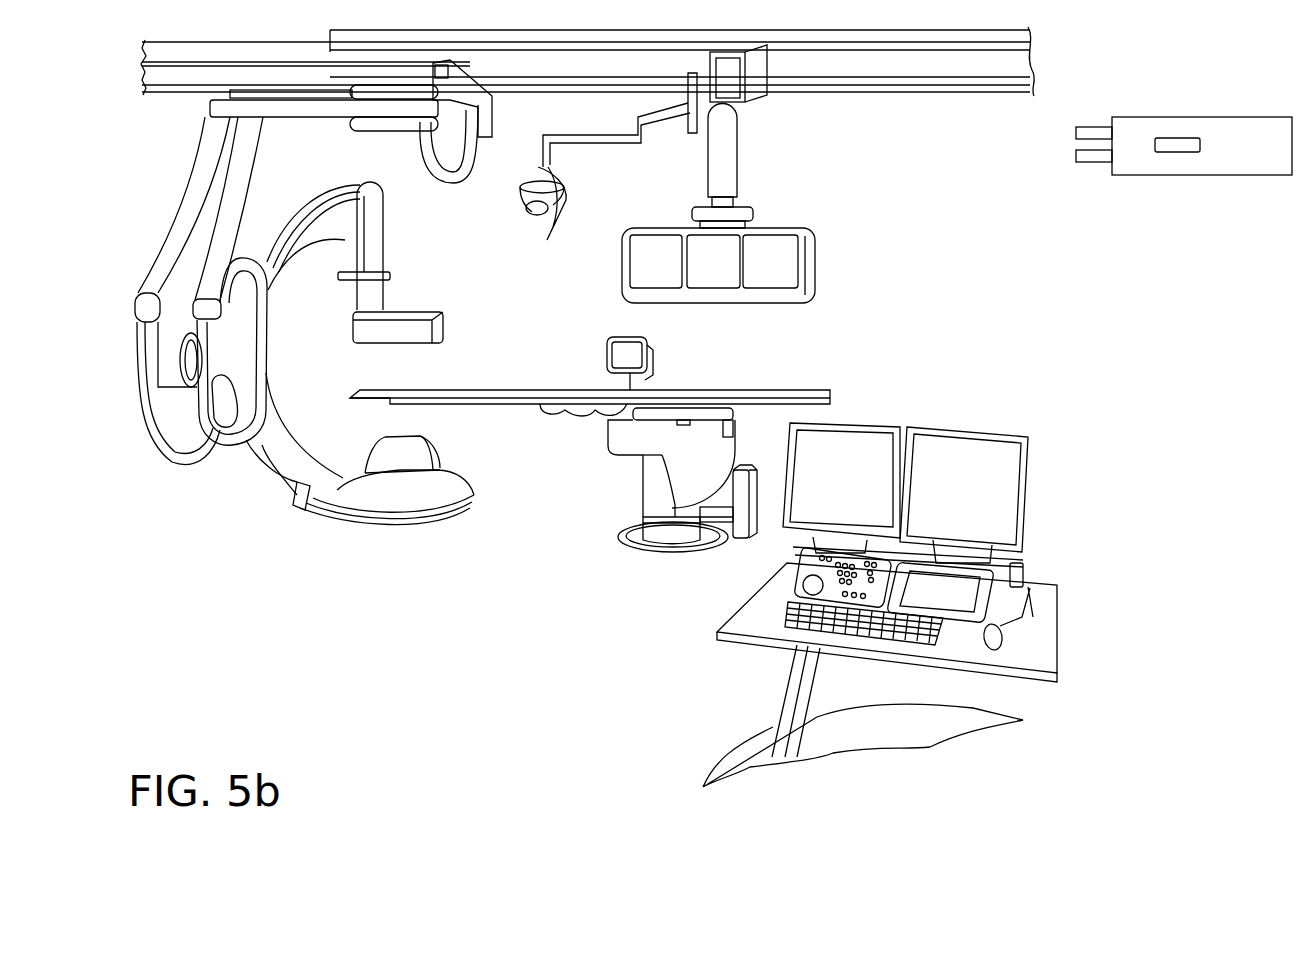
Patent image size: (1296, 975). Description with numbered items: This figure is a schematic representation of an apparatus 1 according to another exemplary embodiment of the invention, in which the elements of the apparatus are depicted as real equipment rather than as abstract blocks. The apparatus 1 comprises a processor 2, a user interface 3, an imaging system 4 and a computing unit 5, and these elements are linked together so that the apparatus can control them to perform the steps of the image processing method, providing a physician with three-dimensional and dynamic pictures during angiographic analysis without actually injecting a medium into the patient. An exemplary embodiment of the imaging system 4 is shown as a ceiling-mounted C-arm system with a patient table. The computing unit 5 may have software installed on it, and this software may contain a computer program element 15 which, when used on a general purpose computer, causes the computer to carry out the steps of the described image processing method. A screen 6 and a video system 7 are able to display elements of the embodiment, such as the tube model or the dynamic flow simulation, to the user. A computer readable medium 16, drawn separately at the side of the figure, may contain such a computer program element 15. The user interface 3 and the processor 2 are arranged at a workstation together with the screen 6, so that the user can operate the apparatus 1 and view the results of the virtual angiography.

The apparatus 1 is at (125, 106).
The processor 2 is at (795, 552).
The user interface 3 is at (790, 628).
The imaging system 4 is at (353, 543).
The computing unit 5 is at (896, 392).
The screen 6 is at (963, 452).
The video system 7 is at (815, 214).
The computer program element 15 is at (1022, 570).
The computer readable medium 16 is at (1172, 117).